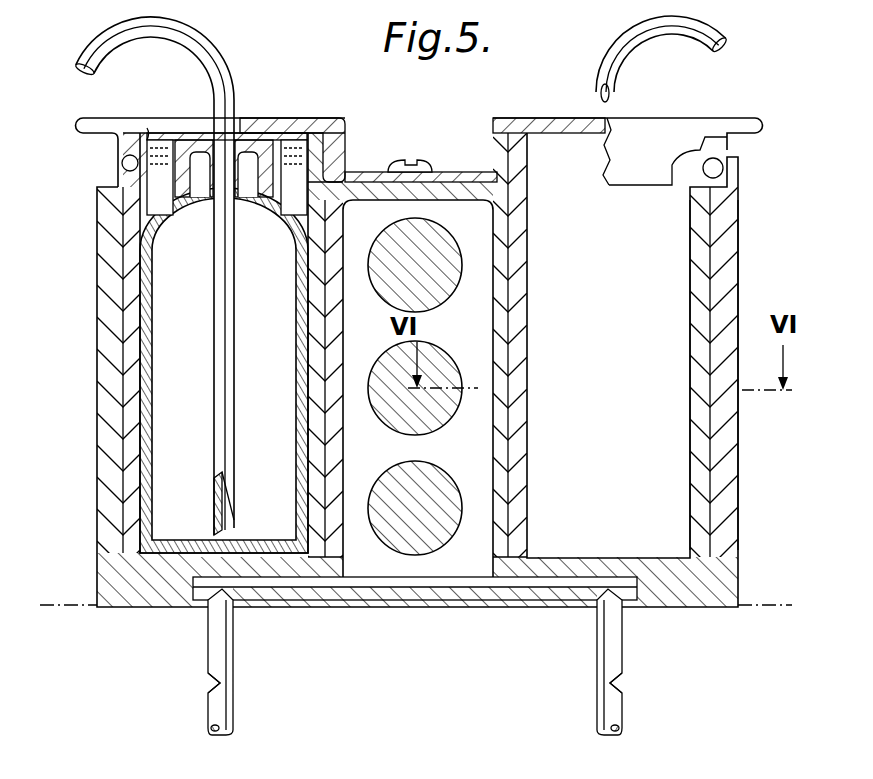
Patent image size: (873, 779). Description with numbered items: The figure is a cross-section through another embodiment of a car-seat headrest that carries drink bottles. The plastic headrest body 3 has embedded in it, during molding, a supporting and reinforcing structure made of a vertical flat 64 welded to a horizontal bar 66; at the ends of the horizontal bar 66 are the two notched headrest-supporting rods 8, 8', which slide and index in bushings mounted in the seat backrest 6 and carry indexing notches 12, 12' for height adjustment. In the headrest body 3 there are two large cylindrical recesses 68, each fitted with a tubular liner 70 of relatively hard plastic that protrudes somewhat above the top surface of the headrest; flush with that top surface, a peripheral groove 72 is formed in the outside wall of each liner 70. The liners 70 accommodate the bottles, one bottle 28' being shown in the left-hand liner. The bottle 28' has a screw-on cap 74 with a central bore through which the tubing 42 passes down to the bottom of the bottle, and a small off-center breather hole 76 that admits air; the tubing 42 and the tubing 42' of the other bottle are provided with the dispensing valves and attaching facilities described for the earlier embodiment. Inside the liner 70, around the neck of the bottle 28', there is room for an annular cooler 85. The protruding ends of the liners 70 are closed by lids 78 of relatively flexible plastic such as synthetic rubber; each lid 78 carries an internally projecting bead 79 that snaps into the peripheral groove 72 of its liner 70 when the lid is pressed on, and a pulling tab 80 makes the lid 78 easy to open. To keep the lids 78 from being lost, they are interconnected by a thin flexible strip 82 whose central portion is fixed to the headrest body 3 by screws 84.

The headrest body 3 is at (103, 485).
The backrest 6 is at (775, 607).
The rod 8 is at (200, 662).
The rod 8' is at (637, 662).
The indexing notch 12 is at (182, 688).
The indexing notch 12' is at (641, 689).
The bottle 28' is at (224, 370).
The tubing 42 is at (154, 267).
The tubing 42' is at (654, 51).
The vertical flat 64 is at (472, 339).
The horizontal bar 66 is at (530, 585).
The cylindrical recess 68 is at (707, 510).
The tubular liner 70 is at (703, 388).
The peripheral groove 72 is at (527, 171).
The screw-on cap 74 is at (203, 140).
The breather hole 76 is at (248, 140).
The lid 78 is at (341, 117).
The bead 79 is at (153, 117).
The pulling tab 80 is at (77, 117).
The flexible strip 82 is at (463, 172).
The screw 84 is at (407, 162).
The annular cooler 85 is at (122, 161).